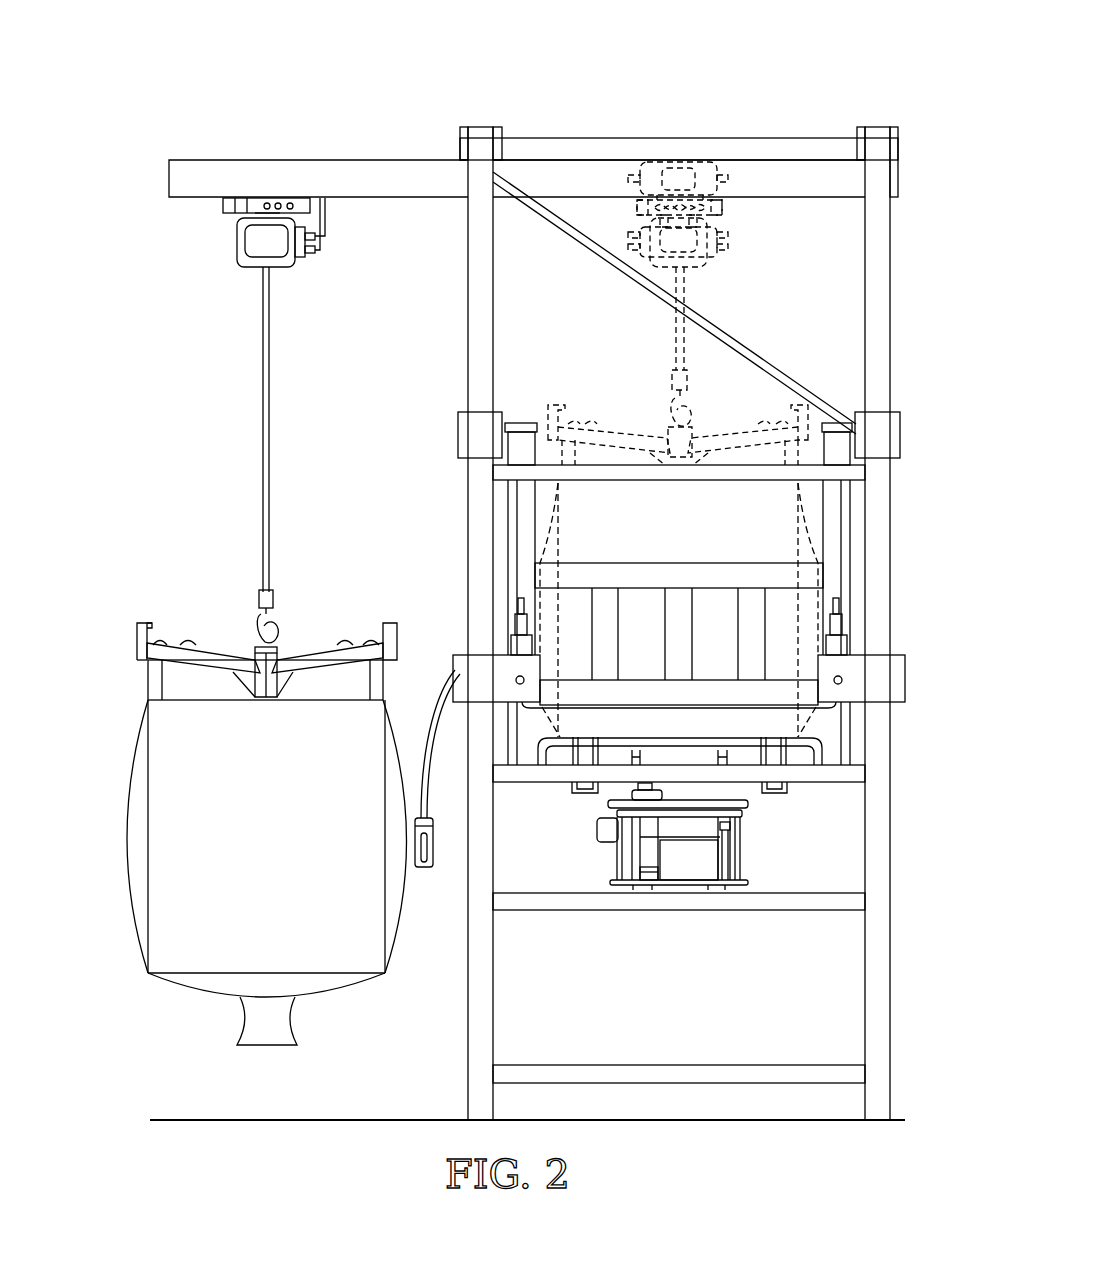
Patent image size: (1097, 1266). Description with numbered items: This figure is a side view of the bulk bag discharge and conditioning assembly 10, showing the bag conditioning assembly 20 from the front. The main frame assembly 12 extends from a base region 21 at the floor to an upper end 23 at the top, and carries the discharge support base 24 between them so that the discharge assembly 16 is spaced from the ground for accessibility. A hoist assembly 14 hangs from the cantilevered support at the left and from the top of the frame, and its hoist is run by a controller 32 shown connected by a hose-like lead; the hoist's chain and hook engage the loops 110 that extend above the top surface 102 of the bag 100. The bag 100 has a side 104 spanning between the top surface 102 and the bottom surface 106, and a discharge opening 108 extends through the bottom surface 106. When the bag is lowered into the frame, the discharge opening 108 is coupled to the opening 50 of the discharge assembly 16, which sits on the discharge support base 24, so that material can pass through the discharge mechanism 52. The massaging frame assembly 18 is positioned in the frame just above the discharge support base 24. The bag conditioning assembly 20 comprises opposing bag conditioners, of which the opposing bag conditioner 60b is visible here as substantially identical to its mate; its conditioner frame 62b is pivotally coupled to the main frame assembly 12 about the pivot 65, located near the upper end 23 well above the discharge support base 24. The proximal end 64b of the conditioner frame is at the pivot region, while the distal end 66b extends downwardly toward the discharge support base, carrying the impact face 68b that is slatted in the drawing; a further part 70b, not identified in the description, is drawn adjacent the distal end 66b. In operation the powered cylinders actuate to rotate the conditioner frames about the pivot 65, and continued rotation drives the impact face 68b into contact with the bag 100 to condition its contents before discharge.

The bulk bag discharge and conditioning assembly 10 is at (838, 44).
The main frame assembly 12 is at (556, 137).
The hoist assembly 14 is at (296, 280).
The discharge assembly 16 is at (630, 860).
The massaging frame assembly 18 is at (834, 748).
The bag conditioning assembly 20 is at (830, 542).
The base region 21 is at (838, 718).
The upper end 23 is at (897, 238).
The discharge support base 24 is at (825, 778).
The controller 32 is at (434, 843).
The opening 50 is at (737, 838).
The discharge mechanism 52 is at (678, 868).
The opposing bag conditioner 60b is at (855, 600).
The conditioner frame 62b is at (499, 562).
The proximal end 64b is at (839, 412).
The pivot 65 is at (522, 414).
The distal end 66b is at (806, 693).
The impact face 68b is at (718, 608).
The actuator 70b is at (845, 645).
The bag 100 is at (121, 896).
The top surface 102 is at (187, 705).
The side 104 is at (123, 836).
The bottom surface 106 is at (205, 970).
The discharge opening 108 is at (233, 1032).
The loops 110 is at (143, 676).